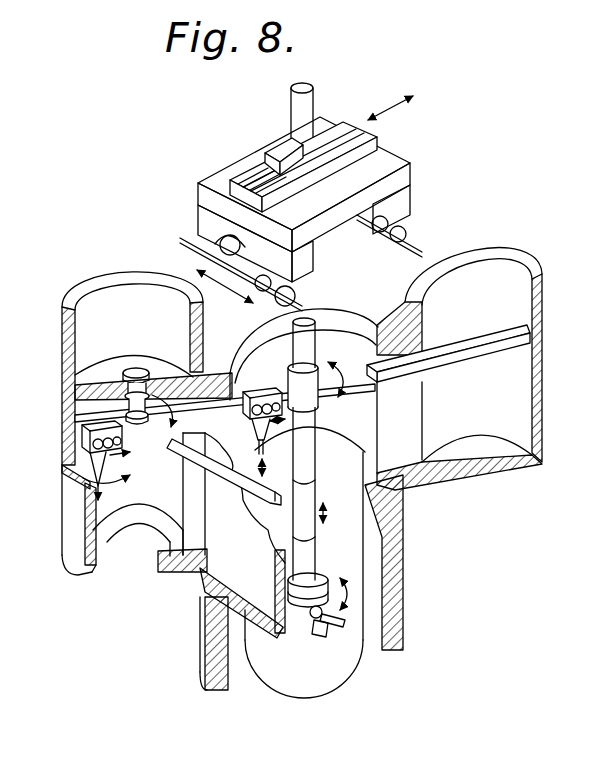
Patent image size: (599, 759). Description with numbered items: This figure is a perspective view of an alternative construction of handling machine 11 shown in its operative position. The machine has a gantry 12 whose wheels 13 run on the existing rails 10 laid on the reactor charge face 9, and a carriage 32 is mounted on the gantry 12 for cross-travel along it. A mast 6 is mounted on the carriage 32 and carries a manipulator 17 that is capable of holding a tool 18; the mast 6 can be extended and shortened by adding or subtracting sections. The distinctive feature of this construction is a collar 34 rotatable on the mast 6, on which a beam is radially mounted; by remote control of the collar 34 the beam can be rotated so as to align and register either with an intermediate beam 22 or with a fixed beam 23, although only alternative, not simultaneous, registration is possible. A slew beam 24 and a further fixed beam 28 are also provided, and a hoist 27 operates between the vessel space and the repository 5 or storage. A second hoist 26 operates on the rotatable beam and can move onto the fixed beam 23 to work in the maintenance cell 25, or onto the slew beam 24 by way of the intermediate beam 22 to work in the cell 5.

The repository 5 is at (83, 482).
The mast 6 is at (308, 106).
The reactor charge face 9 is at (362, 267).
The existing rails 10 is at (198, 245).
The handling machine 11 is at (388, 135).
The gantry 12 is at (395, 158).
The wheels 13 is at (204, 238).
The manipulator 17 is at (305, 600).
The tool 18 is at (338, 636).
The intermediate beam 22 is at (237, 408).
The fixed beam 23 is at (452, 355).
The slew beam 24 is at (121, 399).
The maintenance cell 25 is at (520, 378).
The hoist 26 is at (268, 405).
The hoist 27 is at (84, 440).
The fixed beam 28 is at (215, 472).
The carriage 32 is at (284, 152).
The collar 34 is at (312, 397).